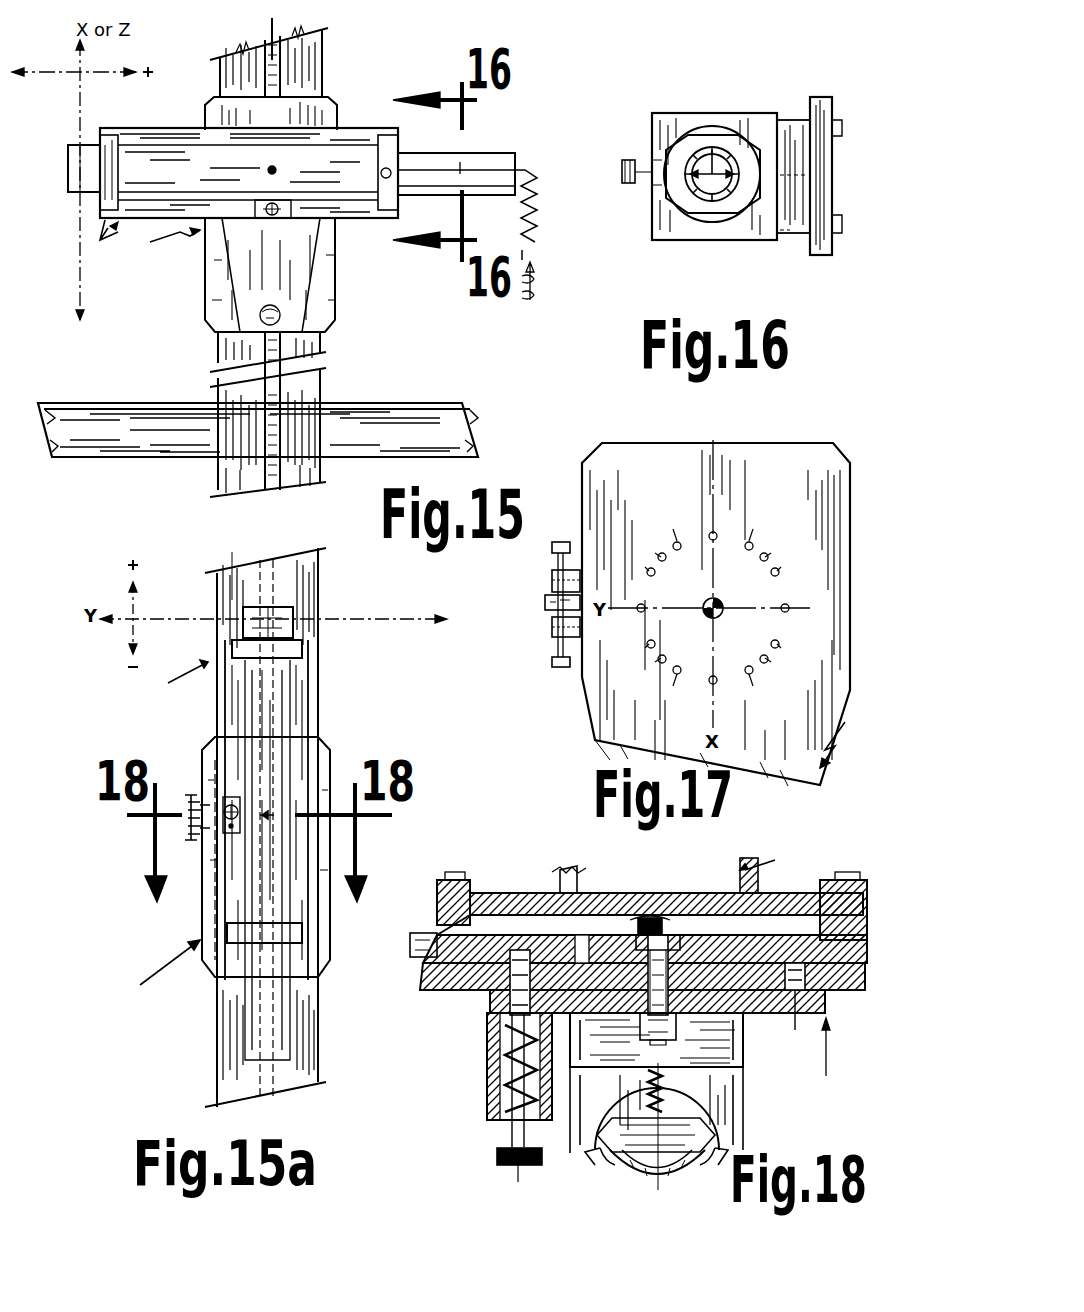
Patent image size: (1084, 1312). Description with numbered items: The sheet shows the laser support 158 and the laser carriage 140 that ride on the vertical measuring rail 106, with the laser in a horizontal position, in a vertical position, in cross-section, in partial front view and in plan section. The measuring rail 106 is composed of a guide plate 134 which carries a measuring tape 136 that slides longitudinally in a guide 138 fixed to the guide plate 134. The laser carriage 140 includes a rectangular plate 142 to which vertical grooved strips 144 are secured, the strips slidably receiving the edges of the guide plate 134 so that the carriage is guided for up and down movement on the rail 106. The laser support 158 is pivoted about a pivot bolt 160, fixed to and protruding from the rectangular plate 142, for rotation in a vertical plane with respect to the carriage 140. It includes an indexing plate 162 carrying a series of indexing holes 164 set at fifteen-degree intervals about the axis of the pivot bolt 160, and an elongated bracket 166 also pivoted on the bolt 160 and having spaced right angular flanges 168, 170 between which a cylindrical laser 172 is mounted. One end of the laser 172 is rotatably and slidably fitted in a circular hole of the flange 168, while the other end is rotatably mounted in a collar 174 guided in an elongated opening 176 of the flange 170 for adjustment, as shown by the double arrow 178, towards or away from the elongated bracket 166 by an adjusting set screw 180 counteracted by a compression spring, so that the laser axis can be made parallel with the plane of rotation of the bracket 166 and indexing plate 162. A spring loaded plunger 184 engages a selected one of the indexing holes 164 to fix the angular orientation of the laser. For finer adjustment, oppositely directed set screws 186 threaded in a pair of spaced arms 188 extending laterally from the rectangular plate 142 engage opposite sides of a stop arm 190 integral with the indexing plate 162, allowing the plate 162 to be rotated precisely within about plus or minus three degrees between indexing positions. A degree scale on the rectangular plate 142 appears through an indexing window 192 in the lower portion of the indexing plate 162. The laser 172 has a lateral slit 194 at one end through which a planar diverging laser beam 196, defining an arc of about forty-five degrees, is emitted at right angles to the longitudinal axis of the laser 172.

In FIG. 18, the measuring rail 106 is at (745, 858).
In FIG. 18, the guide plate 134 is at (480, 895).
In FIG. 15, the measuring tape 136 is at (285, 452).
In FIG. 18, the measuring tape 136 is at (618, 893).
In FIG. 15A, the guide 138 is at (252, 580).
In FIG. 18, the guide 138 is at (600, 893).
In FIG. 15A, the laser carriage 140 is at (151, 973).
In FIG. 18, the laser carriage 140 is at (862, 930).
In FIG. 15, the rectangular plate 142 is at (214, 275).
In FIG. 18, the rectangular plate 142 is at (490, 975).
In FIG. 18, the grooved strips 144 is at (440, 890).
In FIG. 15, the laser support 158 is at (118, 230).
In FIG. 17, the laser support 158 is at (847, 732).
In FIG. 18, the laser support 158 is at (833, 1084).
In FIG. 18, the pivot bolt 160 is at (652, 918).
In FIG. 15, the indexing plate 162 is at (300, 108).
In FIG. 15A, the indexing plate 162 is at (318, 880).
In FIG. 17, the indexing plate 162 is at (740, 470).
In FIG. 18, the indexing plate 162 is at (425, 980).
In FIG. 17, the indexing holes 164 is at (678, 542).
In FIG. 18, the indexing holes 164 is at (512, 915).
In FIG. 15, the elongated bracket 166 is at (345, 210).
In FIG. 15A, the elongated bracket 166 is at (298, 702).
In FIG. 18, the elongated bracket 166 is at (745, 1018).
In FIG. 15, the flange 168 is at (118, 140).
In FIG. 15, the flange 170 is at (400, 168).
In FIG. 18, the flange 170 is at (730, 1100).
In FIG. 15, the cylindrical laser 172 is at (498, 162).
In FIG. 16, the cylindrical laser 172 is at (712, 205).
In FIG. 18, the cylindrical laser 172 is at (640, 1172).
In FIG. 16, the collar 174 is at (690, 140).
In FIG. 18, the collar 174 is at (715, 1138).
In FIG. 16, the elongated opening 176 is at (758, 150).
In FIG. 18, the elongated opening 176 is at (605, 1160).
In FIG. 16, the double arrow 178 is at (730, 140).
In FIG. 15, the adjusting set screw 180 is at (400, 172).
In FIG. 16, the adjusting set screw 180 is at (628, 158).
In FIG. 15, the spring loaded plunger 184 is at (265, 212).
In FIG. 15A, the spring loaded plunger 184 is at (230, 800).
In FIG. 18, the spring loaded plunger 184 is at (495, 1155).
In FIG. 17, the set screws 186 is at (560, 540).
In FIG. 17, the spaced arms 188 is at (551, 580).
In FIG. 18, the spaced arms 188 is at (410, 945).
In FIG. 17, the stop arm 190 is at (544, 603).
In FIG. 15, the indexing window 192 is at (212, 325).
In FIG. 15, the lateral slit 194 is at (75, 160).
In FIG. 15A, the lateral slit 194 is at (292, 625).
In FIG. 15A, the laser beam 196 is at (187, 800).